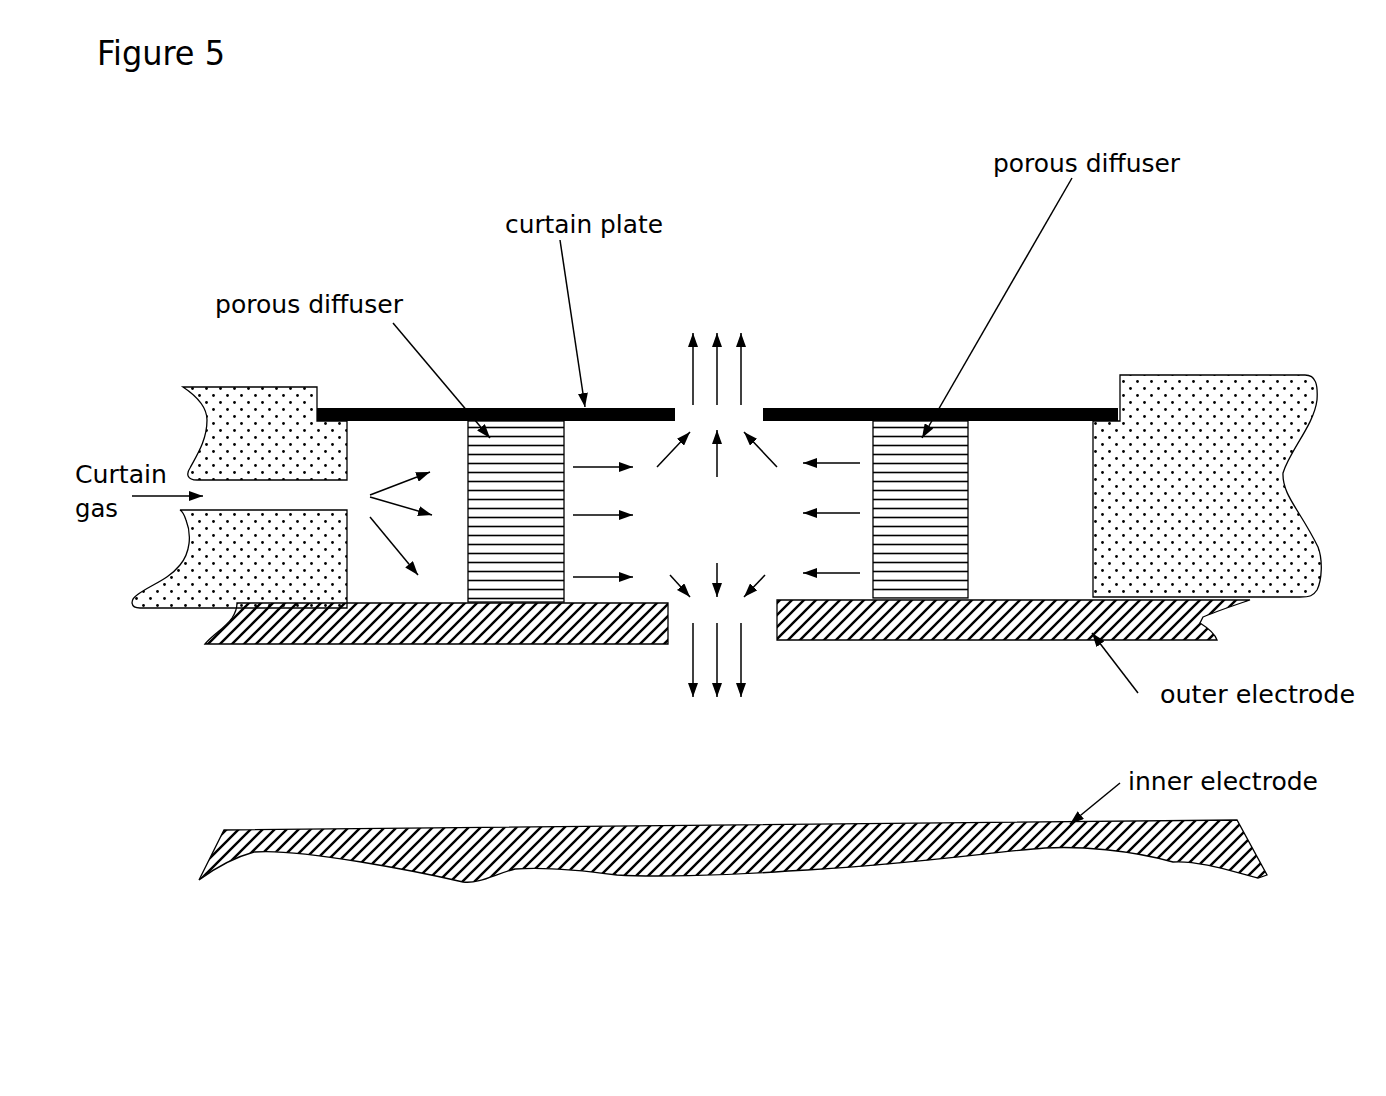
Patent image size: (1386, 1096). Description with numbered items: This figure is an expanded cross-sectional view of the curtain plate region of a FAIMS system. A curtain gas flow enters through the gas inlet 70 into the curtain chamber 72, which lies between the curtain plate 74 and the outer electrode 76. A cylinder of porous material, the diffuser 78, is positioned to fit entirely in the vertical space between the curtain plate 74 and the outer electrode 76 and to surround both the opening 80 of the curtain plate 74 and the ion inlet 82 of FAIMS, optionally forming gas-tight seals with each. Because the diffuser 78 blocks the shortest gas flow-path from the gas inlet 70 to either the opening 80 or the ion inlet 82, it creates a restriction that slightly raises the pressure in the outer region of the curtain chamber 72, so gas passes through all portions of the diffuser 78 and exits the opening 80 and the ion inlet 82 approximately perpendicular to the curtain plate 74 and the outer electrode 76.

The gas inlet 70 is at (350, 495).
The curtain chamber 72 is at (432, 540).
The curtain plate 74 is at (1065, 407).
The outer electrode 76 is at (460, 643).
The diffuser 78 is at (525, 442).
The opening 80 is at (753, 405).
The ion inlet 82 is at (750, 623).